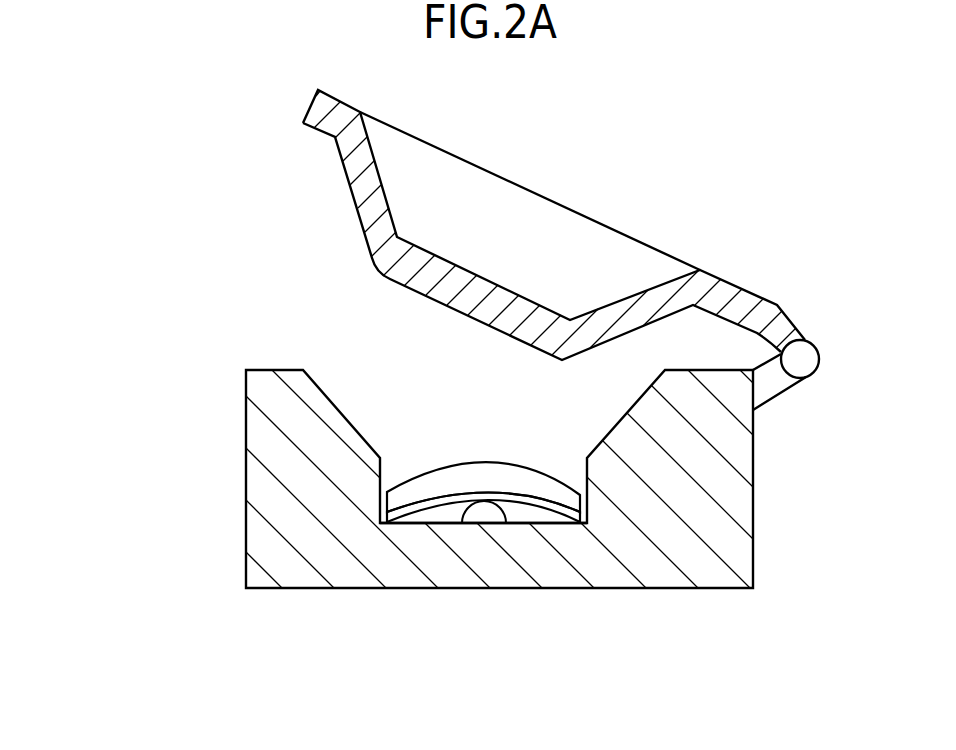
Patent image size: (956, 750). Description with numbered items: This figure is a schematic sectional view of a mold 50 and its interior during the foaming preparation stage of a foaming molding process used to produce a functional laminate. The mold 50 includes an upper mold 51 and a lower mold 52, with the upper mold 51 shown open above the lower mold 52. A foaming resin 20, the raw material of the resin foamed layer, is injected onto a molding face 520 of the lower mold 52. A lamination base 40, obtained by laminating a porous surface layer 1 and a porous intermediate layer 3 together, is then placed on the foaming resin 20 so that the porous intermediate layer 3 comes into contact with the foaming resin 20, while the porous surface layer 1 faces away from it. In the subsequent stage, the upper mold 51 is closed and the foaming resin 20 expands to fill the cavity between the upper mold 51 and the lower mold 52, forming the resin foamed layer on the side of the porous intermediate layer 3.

The mold 50 is at (122, 188).
The upper mold 51 is at (343, 166).
The lower mold 52 is at (246, 423).
The molding face of lower mold 520 is at (518, 525).
The foaming resin 20 is at (484, 513).
The lamination base 40 is at (490, 373).
The porous surface layer 1 is at (413, 490).
The porous intermediate layer 3 is at (432, 500).